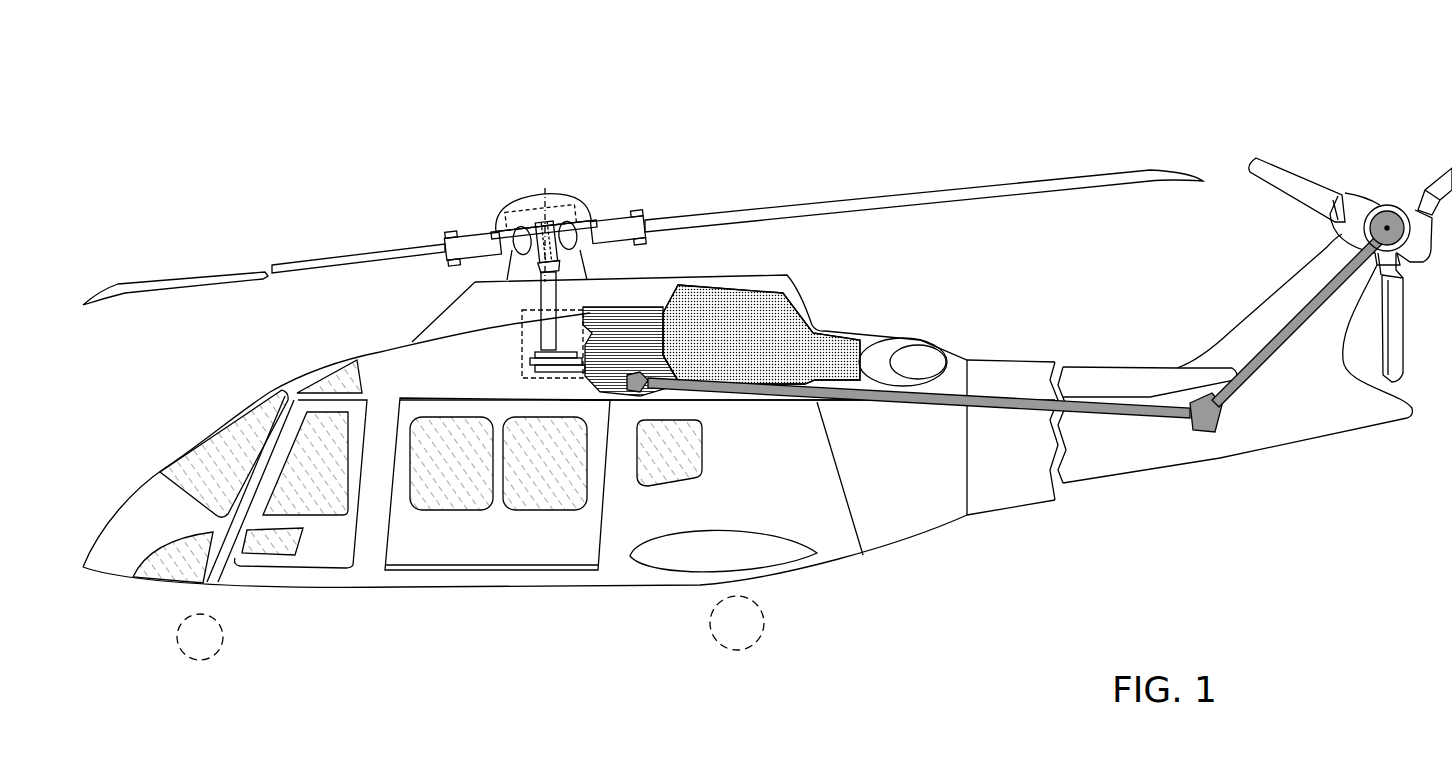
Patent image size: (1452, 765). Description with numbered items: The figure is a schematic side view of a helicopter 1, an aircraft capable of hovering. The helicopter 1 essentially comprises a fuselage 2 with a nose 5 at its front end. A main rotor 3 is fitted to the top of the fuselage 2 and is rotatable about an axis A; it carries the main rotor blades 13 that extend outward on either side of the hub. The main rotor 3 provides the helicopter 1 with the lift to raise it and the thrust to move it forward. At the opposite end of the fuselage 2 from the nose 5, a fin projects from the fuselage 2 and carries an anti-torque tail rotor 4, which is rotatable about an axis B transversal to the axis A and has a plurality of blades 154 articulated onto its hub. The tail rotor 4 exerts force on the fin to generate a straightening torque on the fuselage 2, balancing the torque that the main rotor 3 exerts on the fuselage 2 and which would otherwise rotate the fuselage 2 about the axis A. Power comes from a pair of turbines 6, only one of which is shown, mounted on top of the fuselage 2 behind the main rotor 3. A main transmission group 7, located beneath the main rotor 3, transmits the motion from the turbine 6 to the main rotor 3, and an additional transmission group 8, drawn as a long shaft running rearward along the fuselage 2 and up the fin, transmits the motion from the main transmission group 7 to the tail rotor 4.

The helicopter 1 is at (460, 182).
The fuselage 2 is at (620, 548).
The main rotor 3 is at (665, 175).
The anti-torque tail rotor 4 is at (1433, 262).
The nose 5 is at (150, 517).
The turbine 6 is at (737, 341).
The main transmission group 7 is at (522, 368).
The additional transmission group 8 is at (1270, 372).
The main rotor blades 13 is at (303, 263).
The blades 154 is at (1307, 178).
The axis A is at (540, 178).
The axis B is at (1387, 225).